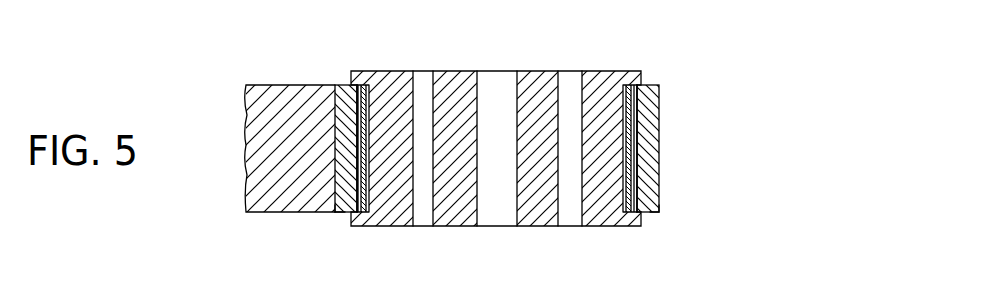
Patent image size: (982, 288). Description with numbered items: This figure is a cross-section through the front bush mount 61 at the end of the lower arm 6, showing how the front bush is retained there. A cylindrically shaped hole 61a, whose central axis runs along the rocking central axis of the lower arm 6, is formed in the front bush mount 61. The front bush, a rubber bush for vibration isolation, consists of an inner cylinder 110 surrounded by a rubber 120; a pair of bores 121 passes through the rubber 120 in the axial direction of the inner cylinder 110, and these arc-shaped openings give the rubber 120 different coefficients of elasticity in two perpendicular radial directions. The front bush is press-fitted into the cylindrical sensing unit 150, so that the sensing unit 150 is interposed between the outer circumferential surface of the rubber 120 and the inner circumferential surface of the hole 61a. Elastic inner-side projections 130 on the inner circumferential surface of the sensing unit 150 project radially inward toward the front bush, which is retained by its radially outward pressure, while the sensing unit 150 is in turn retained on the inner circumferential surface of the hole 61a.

The lower arm 6 is at (287, 108).
The front bush mount 61 is at (347, 117).
The hole 61a is at (356, 100).
The inner cylinder 110 is at (498, 73).
The rubber 120 is at (402, 87).
The bores 121 is at (422, 73).
The inner-side projections 130 is at (372, 187).
The sensing unit 150 is at (337, 212).